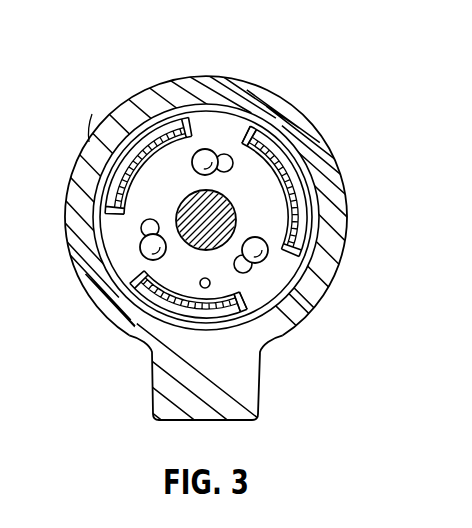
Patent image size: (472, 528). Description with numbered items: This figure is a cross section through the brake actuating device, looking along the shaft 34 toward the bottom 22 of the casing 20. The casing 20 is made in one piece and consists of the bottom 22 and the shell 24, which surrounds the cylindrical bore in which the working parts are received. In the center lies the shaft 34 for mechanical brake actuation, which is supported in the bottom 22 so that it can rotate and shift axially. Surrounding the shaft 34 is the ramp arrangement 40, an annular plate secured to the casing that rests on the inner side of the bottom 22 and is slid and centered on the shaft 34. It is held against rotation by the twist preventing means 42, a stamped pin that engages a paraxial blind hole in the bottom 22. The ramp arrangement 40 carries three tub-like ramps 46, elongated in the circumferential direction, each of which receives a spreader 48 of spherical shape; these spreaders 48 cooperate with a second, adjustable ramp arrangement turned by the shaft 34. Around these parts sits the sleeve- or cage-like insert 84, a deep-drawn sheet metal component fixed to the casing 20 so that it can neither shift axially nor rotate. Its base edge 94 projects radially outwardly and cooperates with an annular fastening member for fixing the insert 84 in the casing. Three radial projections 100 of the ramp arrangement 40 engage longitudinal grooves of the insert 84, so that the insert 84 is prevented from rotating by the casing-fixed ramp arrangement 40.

The casing 20 is at (100, 318).
The bottom 22 is at (108, 270).
The shell 24 is at (84, 112).
The shaft 34 is at (190, 208).
The ramp arrangement 40 is at (281, 292).
The twist preventing means 42 is at (199, 289).
The tub-like ramps 46 is at (272, 132).
The spreader 48 is at (203, 149).
The insert 84 is at (302, 188).
The base edge 94 is at (110, 176).
The radial projections 100 is at (224, 154).